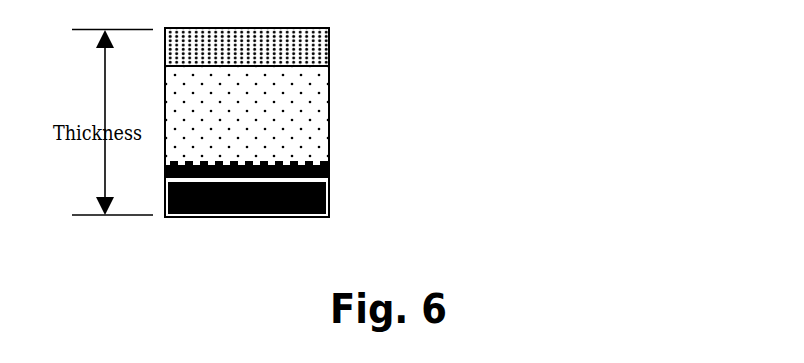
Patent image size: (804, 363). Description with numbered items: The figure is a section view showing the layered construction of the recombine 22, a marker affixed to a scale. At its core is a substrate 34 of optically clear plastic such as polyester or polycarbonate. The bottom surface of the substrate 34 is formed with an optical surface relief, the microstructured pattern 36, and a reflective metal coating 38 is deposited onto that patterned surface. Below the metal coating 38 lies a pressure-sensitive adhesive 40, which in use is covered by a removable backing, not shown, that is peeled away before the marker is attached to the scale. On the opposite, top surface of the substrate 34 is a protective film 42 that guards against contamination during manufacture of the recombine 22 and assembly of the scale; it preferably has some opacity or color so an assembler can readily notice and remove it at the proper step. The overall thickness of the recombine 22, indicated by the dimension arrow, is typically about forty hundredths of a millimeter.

The recombine 22 is at (184, 267).
The substrate 34 is at (345, 117).
The microstructured pattern 36 is at (343, 158).
The reflective metal coating 38 is at (345, 175).
The pressure-sensitive adhesive 40 is at (345, 200).
The protective film 42 is at (345, 48).